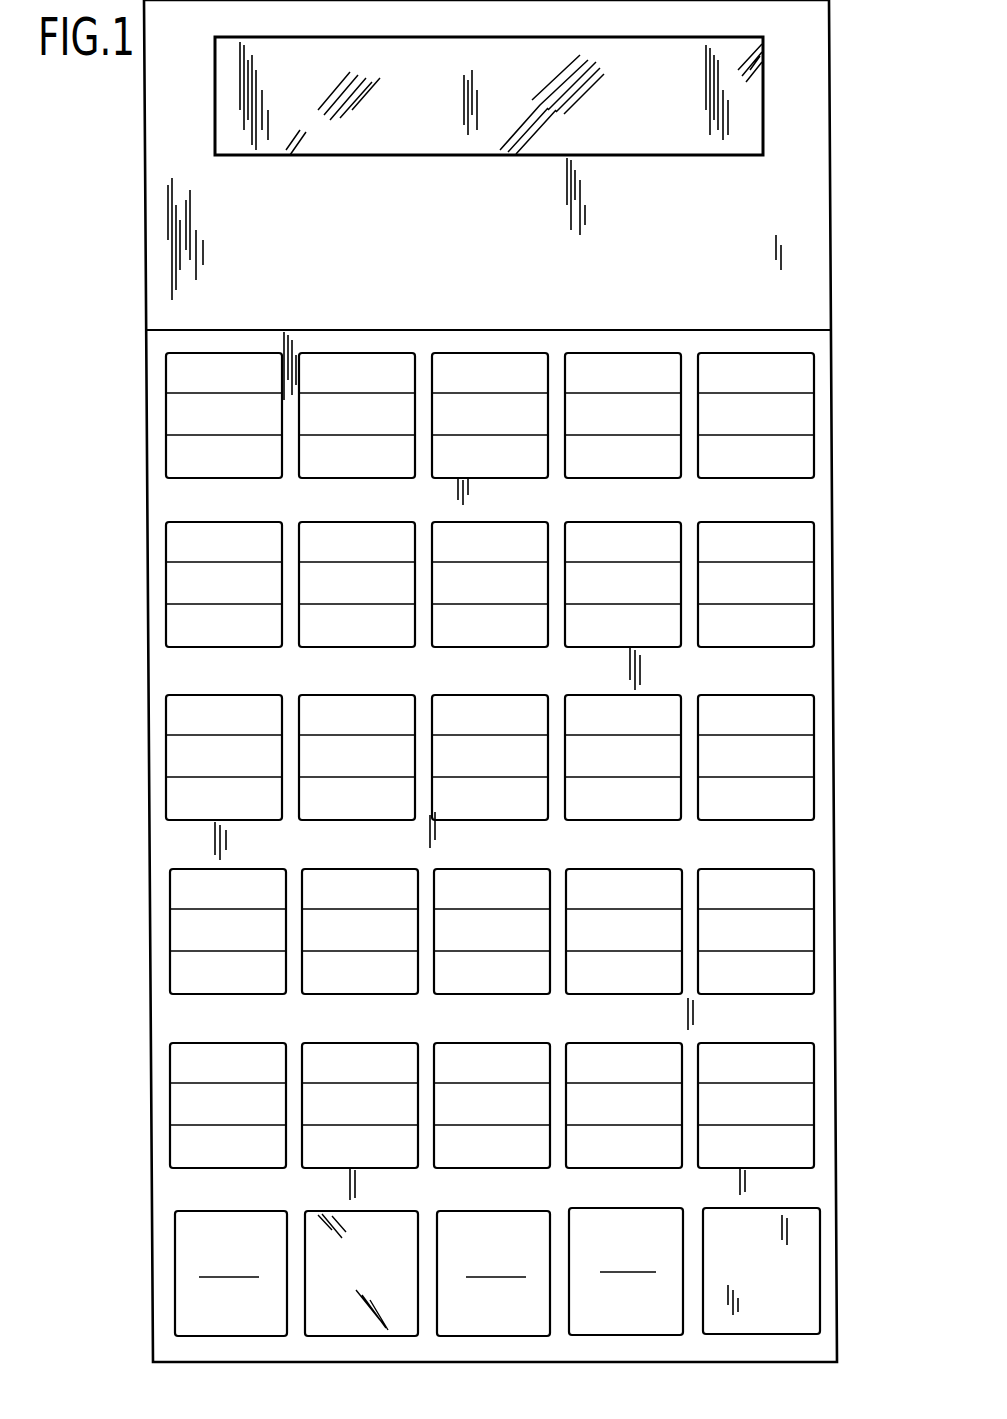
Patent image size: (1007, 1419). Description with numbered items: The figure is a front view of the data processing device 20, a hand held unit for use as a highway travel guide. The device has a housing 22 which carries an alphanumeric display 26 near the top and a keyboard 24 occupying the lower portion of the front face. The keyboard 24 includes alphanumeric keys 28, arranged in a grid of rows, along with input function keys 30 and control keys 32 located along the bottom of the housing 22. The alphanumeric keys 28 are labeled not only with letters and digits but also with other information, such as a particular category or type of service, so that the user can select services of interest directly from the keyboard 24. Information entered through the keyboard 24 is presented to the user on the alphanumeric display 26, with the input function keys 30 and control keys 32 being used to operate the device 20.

The data processing device 20 is at (862, 933).
The housing 22 is at (836, 490).
The keyboard 24 is at (184, 837).
The alphanumeric display 26 is at (215, 100).
The alphanumeric keys 28 is at (143, 1178).
The input function keys 30 is at (450, 1325).
The control keys 32 is at (665, 1325).